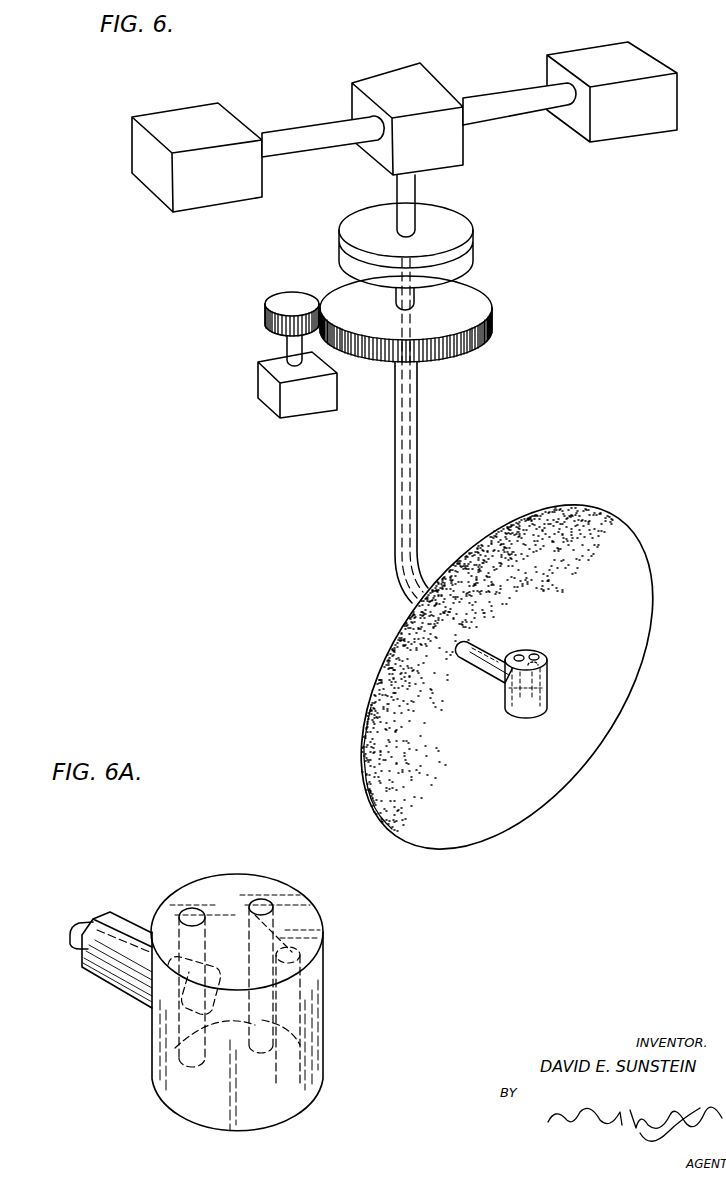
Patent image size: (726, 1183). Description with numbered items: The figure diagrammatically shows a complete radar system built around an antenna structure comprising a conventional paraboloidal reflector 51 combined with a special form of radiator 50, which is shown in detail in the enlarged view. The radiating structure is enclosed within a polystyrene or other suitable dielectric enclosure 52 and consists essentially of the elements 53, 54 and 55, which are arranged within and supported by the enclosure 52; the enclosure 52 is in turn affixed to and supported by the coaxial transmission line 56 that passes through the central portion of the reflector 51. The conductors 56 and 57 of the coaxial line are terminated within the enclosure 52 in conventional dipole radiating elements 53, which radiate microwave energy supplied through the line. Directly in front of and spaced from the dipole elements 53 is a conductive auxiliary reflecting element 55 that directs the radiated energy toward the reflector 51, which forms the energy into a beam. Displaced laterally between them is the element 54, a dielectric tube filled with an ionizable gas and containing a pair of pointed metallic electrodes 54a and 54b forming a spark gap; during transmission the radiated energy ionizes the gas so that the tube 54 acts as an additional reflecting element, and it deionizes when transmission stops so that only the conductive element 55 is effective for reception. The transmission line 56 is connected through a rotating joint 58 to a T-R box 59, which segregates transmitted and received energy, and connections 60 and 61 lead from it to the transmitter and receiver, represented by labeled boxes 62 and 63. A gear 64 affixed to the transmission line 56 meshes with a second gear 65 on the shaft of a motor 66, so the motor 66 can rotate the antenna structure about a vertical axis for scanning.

In FIG. 6, the radiator 50 is at (521, 668).
In FIG. 6, the paraboloidal reflector 51 is at (628, 560).
In FIG. 6, the dielectric enclosure 52 is at (545, 705).
In FIG. 6A, the dielectric enclosure 52 is at (150, 1042).
In FIG. 6, the dipole radiating elements 53 is at (528, 650).
In FIG. 6A, the dipole radiating elements 53 is at (185, 908).
In FIG. 6, the gas-filled tube 54 is at (540, 653).
In FIG. 6A, the gas-filled tube 54 is at (268, 898).
In FIG. 6A, the pointed metallic electrode 54a is at (278, 920).
In FIG. 6A, the pointed metallic electrode 54b is at (270, 1017).
In FIG. 6, the auxiliary reflecting element 55 is at (540, 672).
In FIG. 6A, the auxiliary reflecting element 55 is at (297, 950).
In FIG. 6, the coaxial transmission line 56 is at (502, 657).
In FIG. 6A, the coaxial transmission line 56 is at (102, 983).
In FIG. 6, the conductor 57 is at (493, 652).
In FIG. 6A, the conductor 57 is at (70, 940).
In FIG. 6, the rotating joint 58 is at (468, 231).
In FIG. 6, the T-R box 59 is at (437, 85).
In FIG. 6, the connection 60 is at (312, 145).
In FIG. 6, the connection 61 is at (500, 110).
In FIG. 6, the transmitter 62 is at (152, 188).
In FIG. 6, the receiver 63 is at (650, 132).
In FIG. 6, the gear 64 is at (480, 307).
In FIG. 6, the second gear 65 is at (302, 300).
In FIG. 6, the motor 66 is at (265, 390).